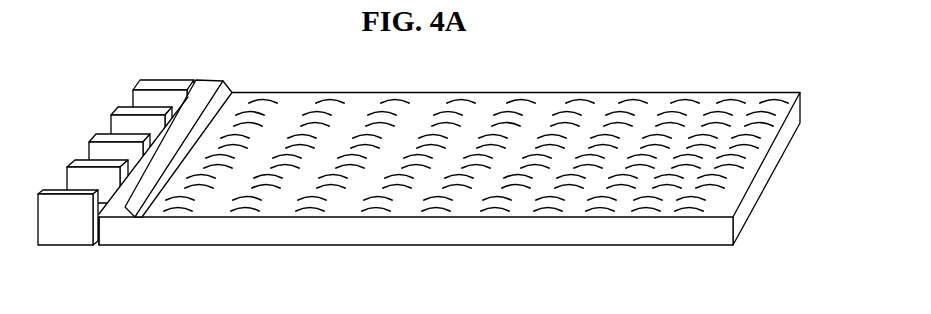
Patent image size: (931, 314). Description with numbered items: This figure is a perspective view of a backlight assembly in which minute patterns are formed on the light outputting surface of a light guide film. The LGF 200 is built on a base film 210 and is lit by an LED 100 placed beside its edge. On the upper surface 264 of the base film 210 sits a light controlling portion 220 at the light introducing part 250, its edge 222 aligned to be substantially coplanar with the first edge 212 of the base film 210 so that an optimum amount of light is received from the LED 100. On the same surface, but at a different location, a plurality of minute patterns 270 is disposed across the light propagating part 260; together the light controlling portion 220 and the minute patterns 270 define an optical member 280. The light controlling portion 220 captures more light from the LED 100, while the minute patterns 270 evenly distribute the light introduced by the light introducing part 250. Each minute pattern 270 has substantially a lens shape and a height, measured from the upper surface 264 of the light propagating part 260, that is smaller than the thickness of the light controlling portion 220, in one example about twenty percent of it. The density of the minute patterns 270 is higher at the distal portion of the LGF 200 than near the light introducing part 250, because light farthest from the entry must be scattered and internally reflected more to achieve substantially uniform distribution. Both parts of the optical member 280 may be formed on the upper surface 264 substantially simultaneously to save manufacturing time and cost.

The LED 100 is at (82, 165).
The LGF 200 is at (725, 240).
The base film 210 is at (600, 232).
The first edge of the base film 212 is at (96, 242).
The light controlling portion 220 is at (118, 216).
The edge of the light controlling portion 222 is at (103, 208).
The light introducing part 250 is at (110, 235).
The light propagating part 260 is at (558, 112).
The upper surface 264 is at (483, 122).
The minute pattern 270 is at (172, 214).
The optical member 280 is at (186, 278).